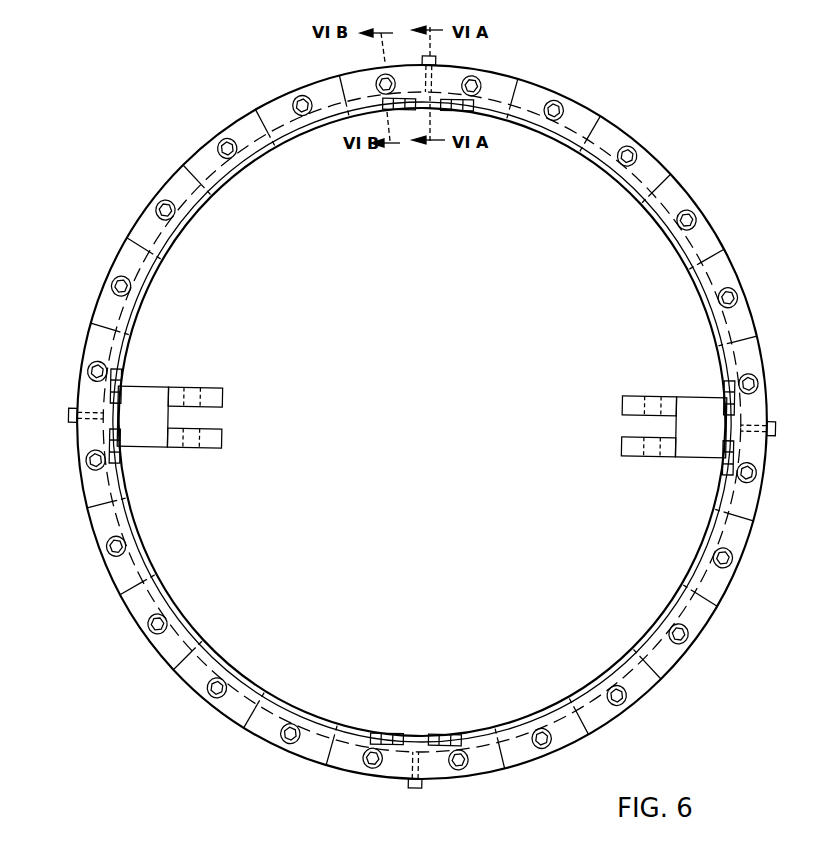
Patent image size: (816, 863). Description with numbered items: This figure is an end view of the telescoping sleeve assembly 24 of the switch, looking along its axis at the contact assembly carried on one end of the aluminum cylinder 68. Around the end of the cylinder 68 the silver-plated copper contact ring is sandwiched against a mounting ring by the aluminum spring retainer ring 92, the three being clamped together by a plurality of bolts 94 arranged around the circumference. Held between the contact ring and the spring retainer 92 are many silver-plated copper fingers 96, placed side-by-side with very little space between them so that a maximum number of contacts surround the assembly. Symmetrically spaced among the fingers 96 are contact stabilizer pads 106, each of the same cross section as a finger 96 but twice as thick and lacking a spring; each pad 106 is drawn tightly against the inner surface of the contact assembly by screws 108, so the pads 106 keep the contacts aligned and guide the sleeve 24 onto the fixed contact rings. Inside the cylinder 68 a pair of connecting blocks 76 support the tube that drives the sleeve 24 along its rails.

The telescoping sleeve assembly 24 is at (449, 811).
The aluminum cylinder 68 is at (253, 688).
The connecting blocks 76 is at (132, 449).
The aluminum spring retainer ring 92 is at (572, 735).
The bolts 94 is at (267, 748).
The silver-plated copper finger 96 is at (452, 113).
The contact stabilizer pads 106 is at (424, 108).
The screws 108 is at (68, 415).